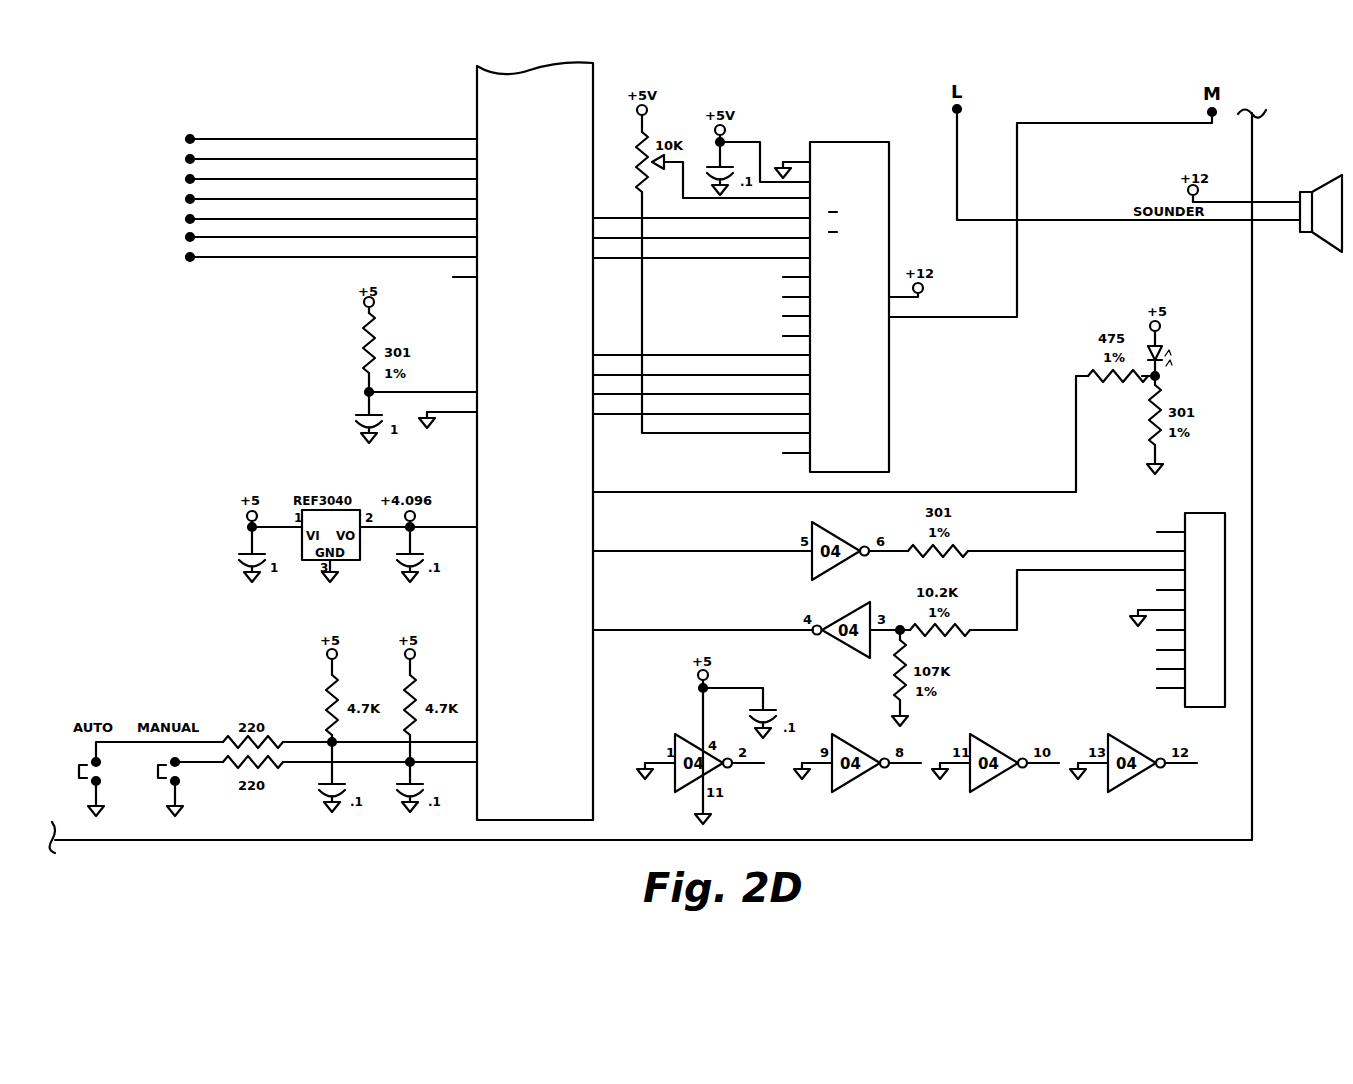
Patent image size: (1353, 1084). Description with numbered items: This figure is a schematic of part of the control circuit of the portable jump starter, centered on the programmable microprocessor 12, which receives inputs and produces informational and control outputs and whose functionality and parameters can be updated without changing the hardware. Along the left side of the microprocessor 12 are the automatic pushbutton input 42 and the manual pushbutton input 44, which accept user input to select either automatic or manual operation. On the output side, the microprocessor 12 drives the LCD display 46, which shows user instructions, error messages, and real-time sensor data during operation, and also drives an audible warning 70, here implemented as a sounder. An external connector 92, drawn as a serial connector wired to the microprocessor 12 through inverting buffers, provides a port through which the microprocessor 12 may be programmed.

The programmable microprocessor 12 is at (386, 436).
The LCD display 46 is at (864, 299).
The audible warning 70 is at (1310, 239).
The external connector 92 is at (1214, 602).
The automatic pushbutton input 42 is at (151, 808).
The manual pushbutton input 44 is at (194, 816).